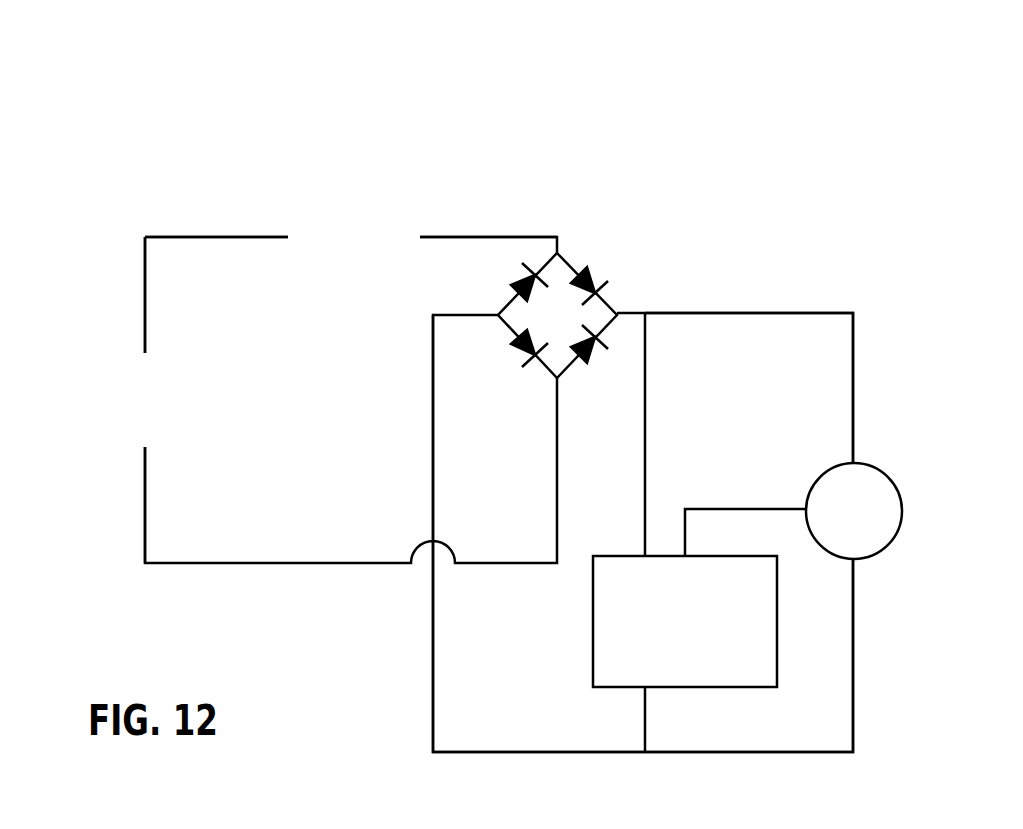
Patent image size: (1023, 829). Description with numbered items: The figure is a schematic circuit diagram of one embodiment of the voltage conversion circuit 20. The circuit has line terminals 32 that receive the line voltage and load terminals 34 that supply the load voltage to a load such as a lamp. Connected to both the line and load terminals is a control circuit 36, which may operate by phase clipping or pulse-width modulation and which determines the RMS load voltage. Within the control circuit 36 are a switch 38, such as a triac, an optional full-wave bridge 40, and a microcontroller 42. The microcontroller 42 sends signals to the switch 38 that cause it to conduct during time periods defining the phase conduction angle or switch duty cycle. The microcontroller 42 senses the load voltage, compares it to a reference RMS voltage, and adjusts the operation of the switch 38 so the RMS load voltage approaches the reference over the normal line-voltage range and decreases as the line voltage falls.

The voltage conversion circuit 20 is at (778, 197).
The line terminals 32 is at (147, 447).
The load terminals 34 is at (420, 237).
The control circuit 36 is at (867, 660).
The switch 38 is at (893, 543).
The full-wave bridge 40 is at (566, 258).
The microcontroller 42 is at (593, 661).